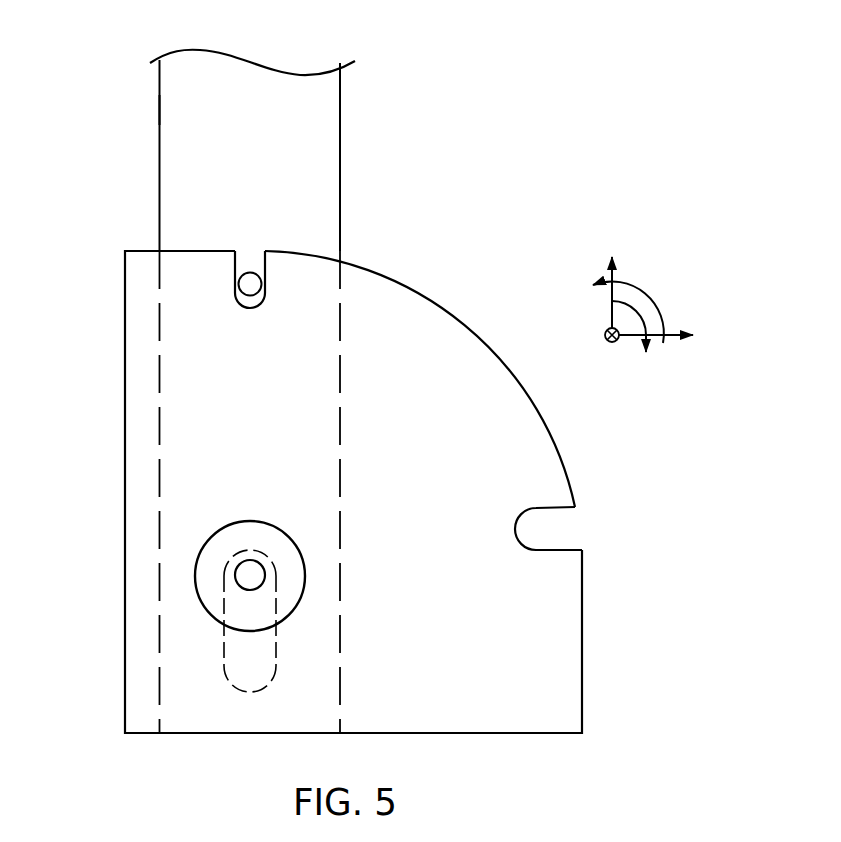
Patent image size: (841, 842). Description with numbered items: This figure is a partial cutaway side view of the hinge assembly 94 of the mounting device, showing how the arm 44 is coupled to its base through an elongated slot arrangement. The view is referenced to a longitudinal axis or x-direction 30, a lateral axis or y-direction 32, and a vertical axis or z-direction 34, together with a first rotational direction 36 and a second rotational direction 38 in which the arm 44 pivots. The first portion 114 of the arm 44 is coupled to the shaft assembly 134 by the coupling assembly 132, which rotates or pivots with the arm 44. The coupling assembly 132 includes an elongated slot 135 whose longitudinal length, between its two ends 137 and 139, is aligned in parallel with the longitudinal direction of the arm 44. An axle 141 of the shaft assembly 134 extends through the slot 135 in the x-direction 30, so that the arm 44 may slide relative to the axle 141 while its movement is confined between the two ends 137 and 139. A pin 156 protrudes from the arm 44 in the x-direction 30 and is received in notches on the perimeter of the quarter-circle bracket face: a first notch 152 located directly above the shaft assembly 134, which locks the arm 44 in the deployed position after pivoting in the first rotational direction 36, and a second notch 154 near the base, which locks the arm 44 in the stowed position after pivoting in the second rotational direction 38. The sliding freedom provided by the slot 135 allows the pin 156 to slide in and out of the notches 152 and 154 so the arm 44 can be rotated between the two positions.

The longitudinal axis or x-direction 30 is at (603, 338).
The lateral axis or y-direction 32 is at (668, 333).
The vertical axis or z-direction 34 is at (616, 274).
The first rotational direction 36 is at (650, 296).
The second rotational direction 38 is at (612, 301).
The arm 44 is at (143, 47).
The hinge assembly 94 is at (514, 164).
The first portion of the arm 114 is at (188, 121).
The coupling assembly 132 is at (108, 415).
The shaft assembly 134 is at (193, 572).
The elongated slot 135 is at (224, 668).
The end of the slot 137 is at (252, 548).
The end of the slot 139 is at (250, 692).
The axle 141 is at (248, 574).
The first notch 152 is at (236, 292).
The second notch 154 is at (556, 550).
The pin 156 is at (247, 271).